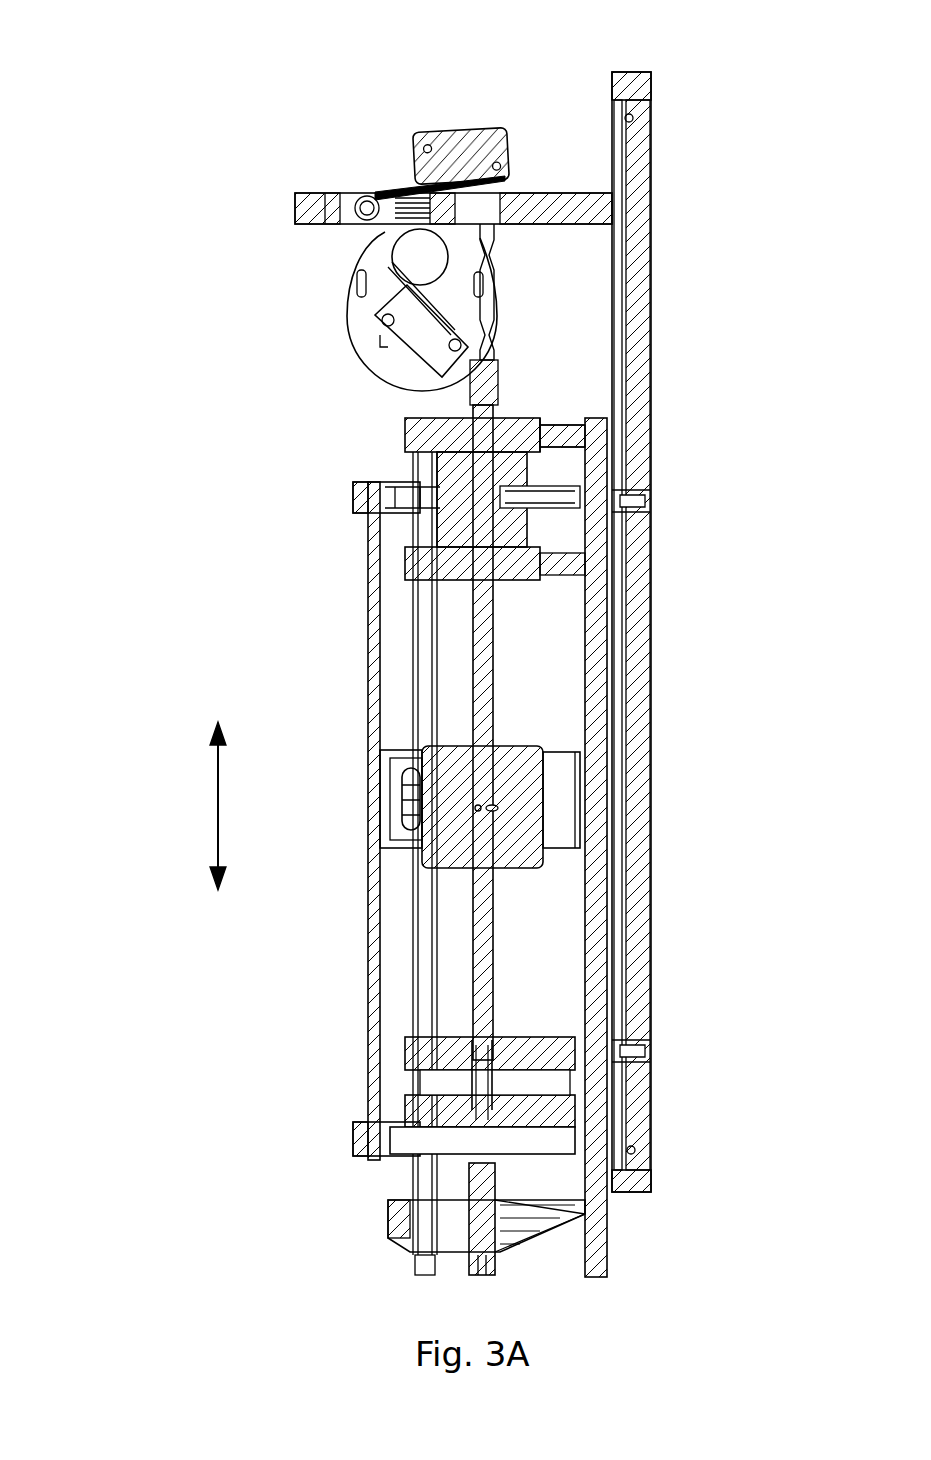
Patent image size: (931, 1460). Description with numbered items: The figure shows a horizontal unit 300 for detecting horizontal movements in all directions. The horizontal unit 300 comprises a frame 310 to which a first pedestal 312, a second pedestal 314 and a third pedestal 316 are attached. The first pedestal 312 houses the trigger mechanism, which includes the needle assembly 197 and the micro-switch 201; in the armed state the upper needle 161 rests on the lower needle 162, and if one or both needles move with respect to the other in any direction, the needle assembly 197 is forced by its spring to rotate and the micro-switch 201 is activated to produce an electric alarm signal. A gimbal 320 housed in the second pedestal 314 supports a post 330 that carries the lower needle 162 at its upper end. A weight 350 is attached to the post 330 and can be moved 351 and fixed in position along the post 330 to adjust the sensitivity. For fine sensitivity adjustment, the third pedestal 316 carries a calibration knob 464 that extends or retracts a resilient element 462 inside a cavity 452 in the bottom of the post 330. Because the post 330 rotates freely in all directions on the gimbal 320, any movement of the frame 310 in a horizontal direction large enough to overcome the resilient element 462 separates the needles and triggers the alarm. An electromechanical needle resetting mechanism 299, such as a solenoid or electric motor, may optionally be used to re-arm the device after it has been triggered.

The horizontal unit 300 is at (262, 112).
The micro-switch 201 is at (446, 132).
The needle assembly 197 is at (390, 190).
The first pedestal 312 is at (545, 192).
The frame 310 is at (653, 78).
The upper needle 161 is at (490, 265).
The lower needle 162 is at (490, 332).
The electromechanical needle resetting mechanism 299 is at (340, 325).
The gimbal 320 is at (302, 462).
The second pedestal 314 is at (352, 497).
The post 330 is at (482, 632).
The movement of weight 351 is at (215, 805).
The weight 350 is at (400, 805).
The cavity 452 is at (478, 1045).
The third pedestal 316 is at (352, 1127).
The resilient element 462 is at (436, 1162).
The calibration knob 464 is at (420, 1258).